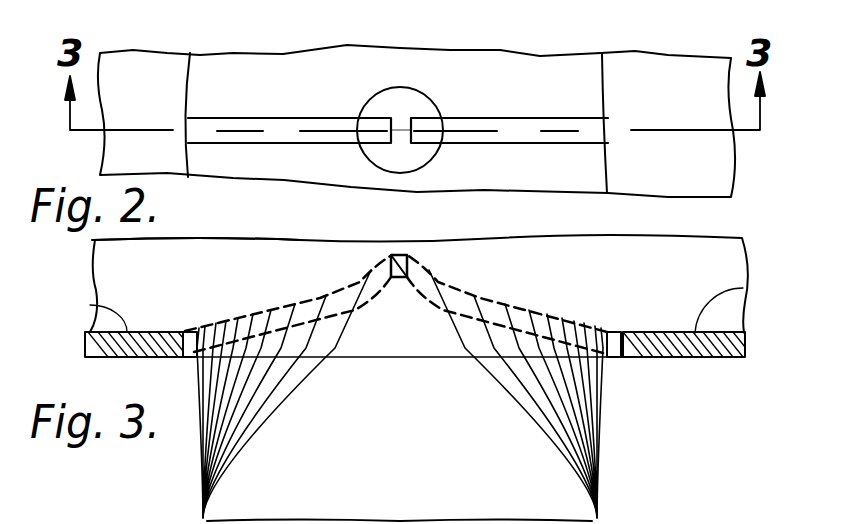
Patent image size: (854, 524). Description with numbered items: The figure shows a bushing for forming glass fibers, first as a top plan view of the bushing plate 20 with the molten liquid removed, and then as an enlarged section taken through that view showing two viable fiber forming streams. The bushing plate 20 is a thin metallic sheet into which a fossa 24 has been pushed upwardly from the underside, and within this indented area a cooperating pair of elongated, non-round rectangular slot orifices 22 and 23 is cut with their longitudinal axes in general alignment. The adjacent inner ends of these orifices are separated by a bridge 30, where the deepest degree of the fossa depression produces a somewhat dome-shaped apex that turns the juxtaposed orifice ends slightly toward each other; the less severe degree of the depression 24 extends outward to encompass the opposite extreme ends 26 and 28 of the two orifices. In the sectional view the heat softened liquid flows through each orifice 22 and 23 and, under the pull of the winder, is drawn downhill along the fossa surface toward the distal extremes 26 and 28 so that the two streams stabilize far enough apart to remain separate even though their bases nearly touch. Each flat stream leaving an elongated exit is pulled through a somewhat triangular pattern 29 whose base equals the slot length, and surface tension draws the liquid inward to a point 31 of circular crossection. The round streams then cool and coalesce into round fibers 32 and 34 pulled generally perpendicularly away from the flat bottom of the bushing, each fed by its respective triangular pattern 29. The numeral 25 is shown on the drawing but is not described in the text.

In FIG. 2, the bushing plate 20 is at (623, 78).
In FIG. 3, the bushing plate 20 is at (90, 304).
In FIG. 2, the orifice 22 is at (497, 131).
In FIG. 3, the orifice 22 is at (548, 312).
In FIG. 2, the orifice 23 is at (287, 131).
In FIG. 3, the orifice 23 is at (306, 301).
In FIG. 2, the fossa 24 is at (317, 86).
In FIG. 3, the fossa 24 is at (356, 345).
In FIG. 3, the upper surface 25 is at (120, 280).
In FIG. 2, the distal extreme end 26 is at (598, 130).
In FIG. 3, the distal extreme end 26 is at (607, 365).
In FIG. 2, the distal extreme end 28 is at (189, 134).
In FIG. 3, the distal extreme end 28 is at (183, 358).
In FIG. 3, the triangular pattern 29 is at (282, 392).
In FIG. 3, the bridge 30 is at (391, 278).
In FIG. 3, the point 31 is at (210, 498).
In FIG. 3, the round fiber 32 is at (594, 514).
In FIG. 3, the round fiber 34 is at (202, 518).